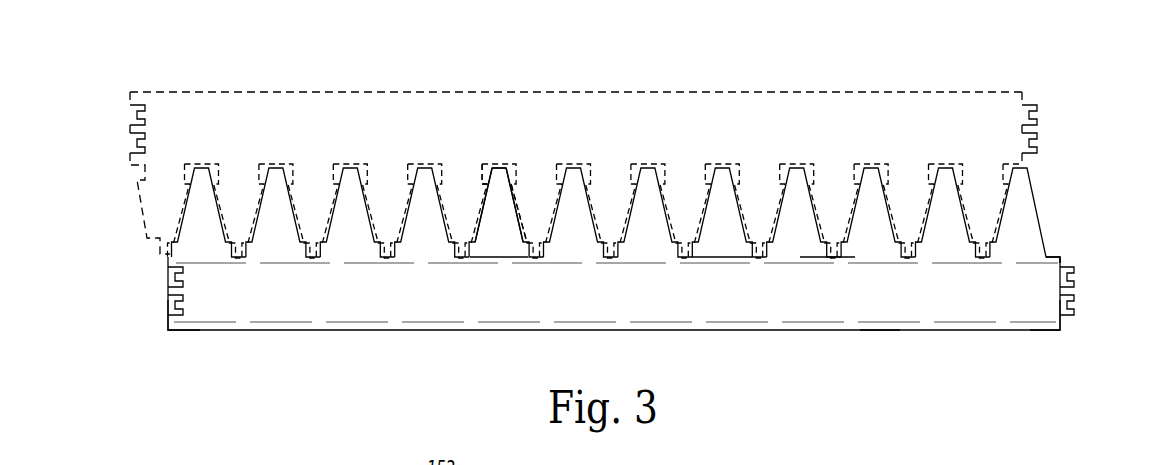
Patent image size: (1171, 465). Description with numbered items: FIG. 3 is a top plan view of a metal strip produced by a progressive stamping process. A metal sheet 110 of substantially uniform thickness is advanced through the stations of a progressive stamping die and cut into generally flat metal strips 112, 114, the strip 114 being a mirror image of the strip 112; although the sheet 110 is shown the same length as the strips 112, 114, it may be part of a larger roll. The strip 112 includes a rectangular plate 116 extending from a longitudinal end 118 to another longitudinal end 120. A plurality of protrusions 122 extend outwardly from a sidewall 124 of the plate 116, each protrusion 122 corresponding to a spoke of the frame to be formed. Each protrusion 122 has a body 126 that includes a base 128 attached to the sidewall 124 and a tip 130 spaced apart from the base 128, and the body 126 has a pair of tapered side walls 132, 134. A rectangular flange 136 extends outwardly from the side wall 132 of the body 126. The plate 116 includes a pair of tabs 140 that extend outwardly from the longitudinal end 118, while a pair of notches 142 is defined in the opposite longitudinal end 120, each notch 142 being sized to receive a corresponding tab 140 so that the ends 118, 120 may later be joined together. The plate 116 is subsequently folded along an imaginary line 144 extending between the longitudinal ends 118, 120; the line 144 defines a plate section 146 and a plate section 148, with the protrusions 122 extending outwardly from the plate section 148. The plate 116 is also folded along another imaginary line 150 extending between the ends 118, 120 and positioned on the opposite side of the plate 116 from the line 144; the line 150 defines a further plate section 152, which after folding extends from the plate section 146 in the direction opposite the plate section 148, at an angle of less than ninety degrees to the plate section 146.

The metal sheet 110 is at (1090, 120).
The metal strip 112 is at (1093, 196).
The metal strip 114 is at (926, 95).
The rectangular plate 116 is at (950, 332).
The longitudinal end 118 is at (1063, 332).
The longitudinal end 120 is at (168, 332).
The protrusion 122 is at (206, 198).
The sidewall 124 is at (1050, 256).
The body 126 is at (499, 198).
The base 128 is at (497, 251).
The tip 130 is at (499, 174).
The tapered side wall 132 is at (490, 178).
The tapered side wall 134 is at (520, 226).
The rectangular flange 136 is at (477, 223).
The tab 140 is at (1076, 280).
The notch 142 is at (165, 301).
The imaginary line 144 is at (828, 259).
The plate section 146 is at (878, 300).
The plate section 148 is at (720, 259).
The imaginary line 150 is at (720, 323).
The plate section 152 is at (625, 331).